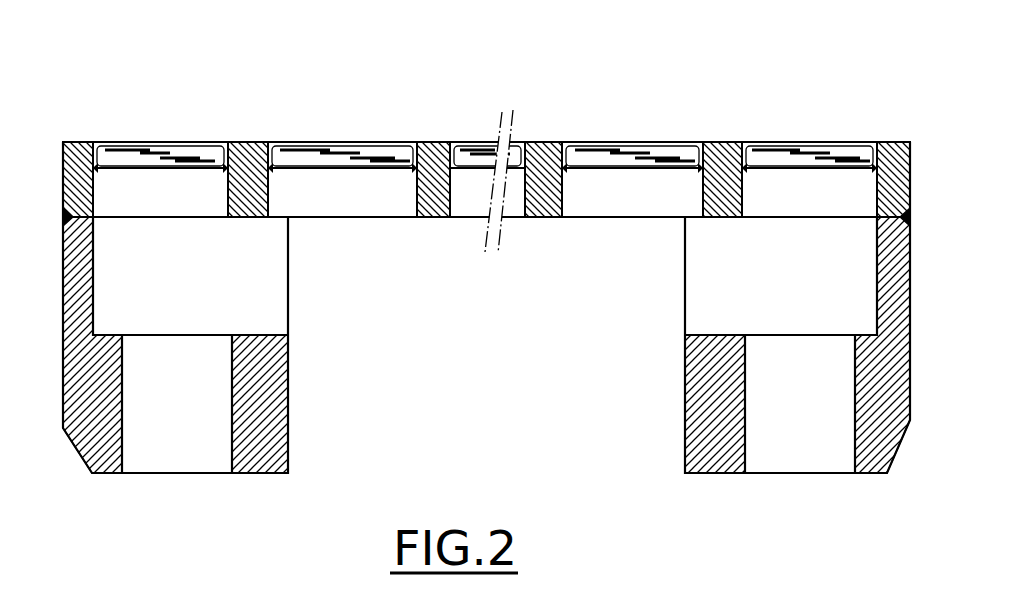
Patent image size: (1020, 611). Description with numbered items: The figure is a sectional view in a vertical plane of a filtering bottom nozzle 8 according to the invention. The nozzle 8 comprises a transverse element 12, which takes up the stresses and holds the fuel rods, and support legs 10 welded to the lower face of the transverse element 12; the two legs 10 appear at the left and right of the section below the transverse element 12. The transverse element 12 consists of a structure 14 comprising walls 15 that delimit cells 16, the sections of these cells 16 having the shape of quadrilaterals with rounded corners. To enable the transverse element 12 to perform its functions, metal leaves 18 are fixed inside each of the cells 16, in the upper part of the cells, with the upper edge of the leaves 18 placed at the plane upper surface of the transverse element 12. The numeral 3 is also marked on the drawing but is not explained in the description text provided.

The panel 3 is at (203, 121).
The nozzle 8 is at (924, 262).
The support legs 10 is at (258, 433).
The transverse element 12 is at (480, 113).
The structure 14 is at (79, 140).
The walls 15 is at (248, 147).
The cells 16 is at (780, 187).
The metal leaves 18 is at (150, 157).